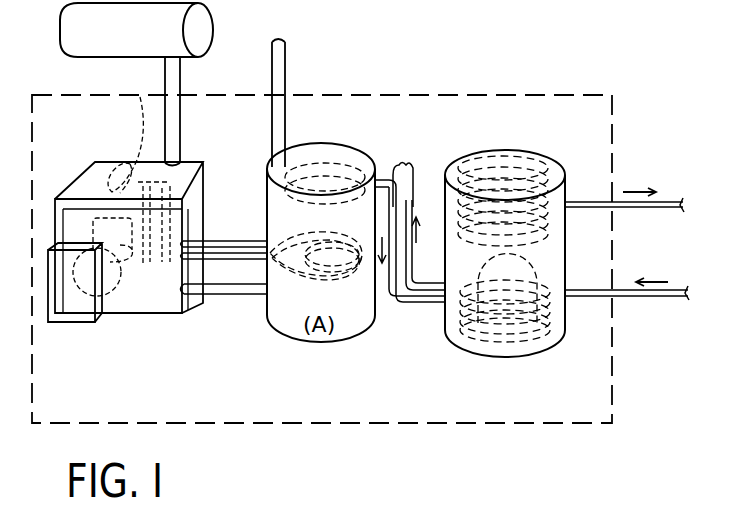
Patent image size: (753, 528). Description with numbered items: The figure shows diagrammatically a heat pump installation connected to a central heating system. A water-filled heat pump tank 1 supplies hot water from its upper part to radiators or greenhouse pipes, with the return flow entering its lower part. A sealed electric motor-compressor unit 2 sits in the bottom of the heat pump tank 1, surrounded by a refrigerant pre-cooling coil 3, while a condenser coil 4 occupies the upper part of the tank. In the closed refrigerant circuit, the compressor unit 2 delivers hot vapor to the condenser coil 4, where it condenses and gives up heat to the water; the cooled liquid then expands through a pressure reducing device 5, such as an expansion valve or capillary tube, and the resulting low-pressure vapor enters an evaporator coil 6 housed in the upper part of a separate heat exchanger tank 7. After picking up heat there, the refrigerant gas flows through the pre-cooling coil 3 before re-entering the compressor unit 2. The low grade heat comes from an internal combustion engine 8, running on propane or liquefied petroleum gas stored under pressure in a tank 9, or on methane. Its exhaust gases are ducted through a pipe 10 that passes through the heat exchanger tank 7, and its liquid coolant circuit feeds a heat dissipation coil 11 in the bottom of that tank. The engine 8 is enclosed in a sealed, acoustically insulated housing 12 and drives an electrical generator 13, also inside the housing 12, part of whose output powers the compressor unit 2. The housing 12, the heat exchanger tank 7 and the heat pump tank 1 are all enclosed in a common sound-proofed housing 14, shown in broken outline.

The heat pump tank 1 is at (510, 150).
The electric motor-compressor unit 2 is at (570, 265).
The refrigerant pre-cooling coil 3 is at (570, 325).
The condenser coil 4 is at (480, 170).
The pressure reducing device 5 is at (402, 165).
The evaporator coil 6 is at (340, 158).
The heat exchanger tank 7 is at (315, 143).
The internal combustion engine 8 is at (142, 96).
The tank 9 is at (204, 36).
The pipe 10 is at (284, 58).
The heat dissipation coil 11 is at (345, 275).
The housing 12 is at (74, 190).
The electrical generator 13 is at (98, 300).
The common sound-proofed housing 14 is at (258, 425).